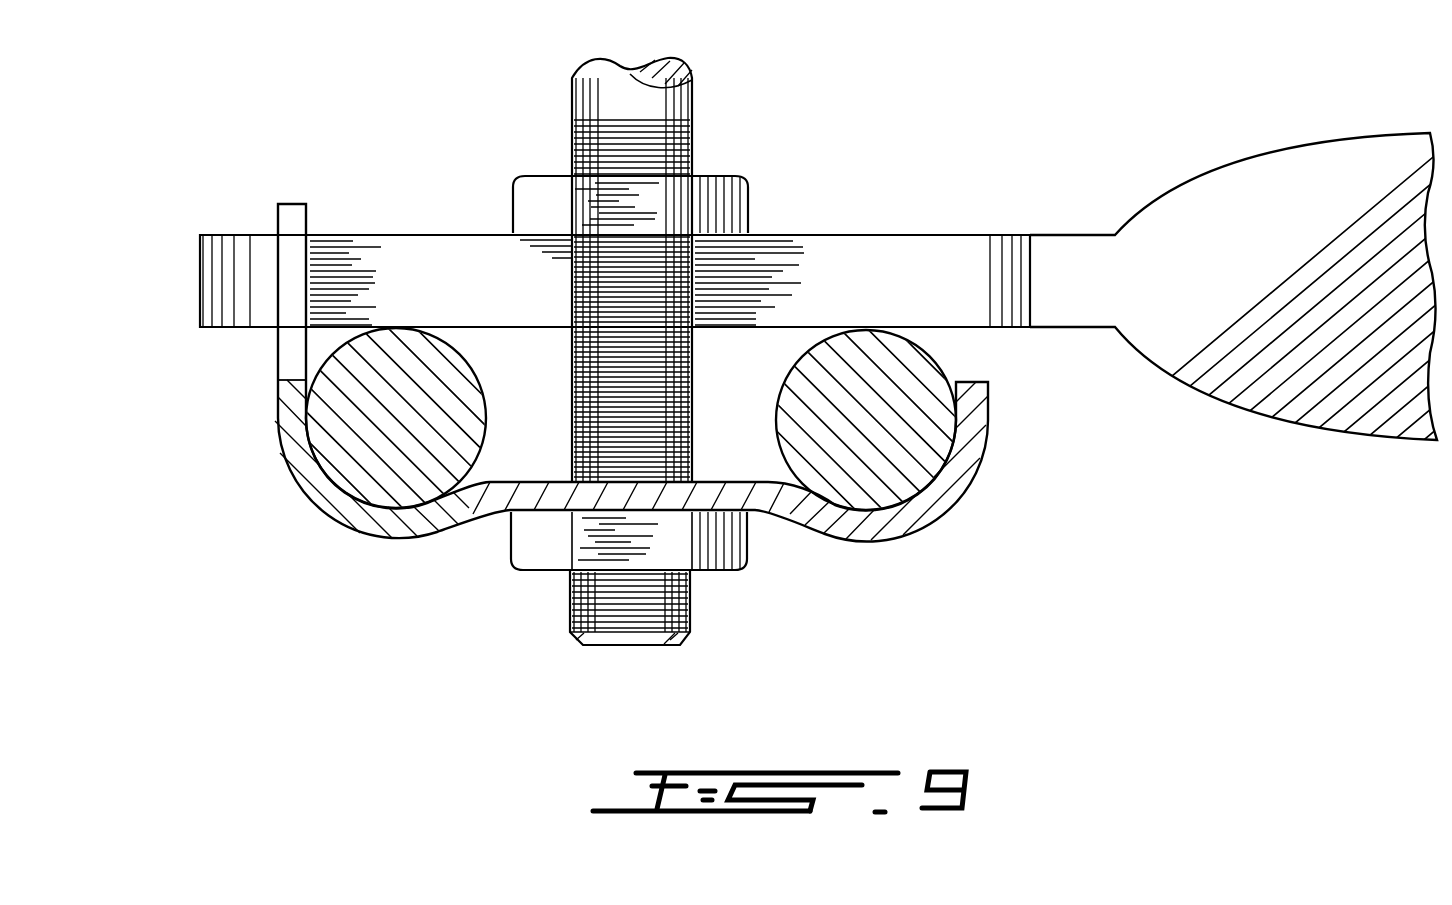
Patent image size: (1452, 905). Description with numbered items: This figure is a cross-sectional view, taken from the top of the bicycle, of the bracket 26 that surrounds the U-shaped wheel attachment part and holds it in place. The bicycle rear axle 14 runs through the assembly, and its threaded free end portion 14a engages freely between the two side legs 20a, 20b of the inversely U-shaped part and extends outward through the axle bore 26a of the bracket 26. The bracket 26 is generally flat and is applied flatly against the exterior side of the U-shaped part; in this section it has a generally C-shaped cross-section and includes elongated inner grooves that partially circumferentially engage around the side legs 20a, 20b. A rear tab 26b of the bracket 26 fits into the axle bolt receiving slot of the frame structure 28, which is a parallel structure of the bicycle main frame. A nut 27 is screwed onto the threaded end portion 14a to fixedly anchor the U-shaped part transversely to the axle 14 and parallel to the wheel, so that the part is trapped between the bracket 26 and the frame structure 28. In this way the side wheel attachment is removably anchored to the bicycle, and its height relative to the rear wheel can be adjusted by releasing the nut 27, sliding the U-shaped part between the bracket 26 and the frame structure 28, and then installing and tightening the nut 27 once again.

The bicycle rear axle 14 is at (665, 100).
The threaded free end portion 14a is at (618, 637).
The side leg 20a is at (908, 410).
The side leg 20b is at (367, 425).
The bracket 26 is at (968, 447).
The axle bore 26a is at (398, 523).
The rear tab 26b is at (293, 350).
The nut 27 is at (722, 541).
The frame structure 28 is at (883, 267).